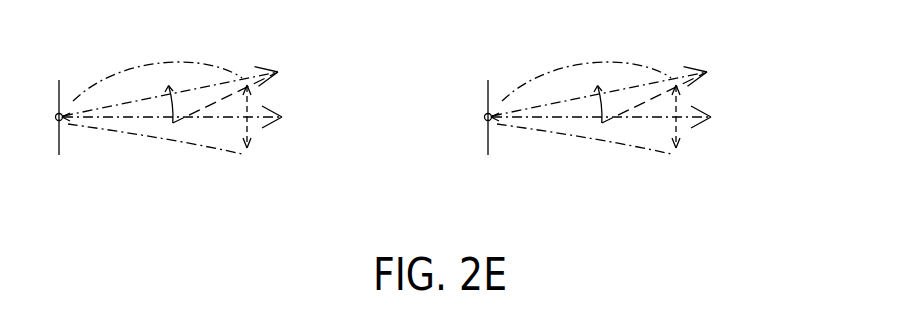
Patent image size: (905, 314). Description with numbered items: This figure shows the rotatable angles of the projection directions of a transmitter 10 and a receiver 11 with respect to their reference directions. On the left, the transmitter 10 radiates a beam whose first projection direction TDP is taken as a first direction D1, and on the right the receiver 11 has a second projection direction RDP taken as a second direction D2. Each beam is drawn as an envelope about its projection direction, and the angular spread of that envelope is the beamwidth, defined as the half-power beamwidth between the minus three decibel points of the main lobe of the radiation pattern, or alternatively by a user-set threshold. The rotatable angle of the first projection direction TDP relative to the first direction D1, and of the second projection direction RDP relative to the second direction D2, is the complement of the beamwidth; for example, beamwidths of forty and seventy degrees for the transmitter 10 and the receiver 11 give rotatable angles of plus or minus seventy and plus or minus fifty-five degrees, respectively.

The transmitter 10 is at (60, 121).
The receiver 11 is at (489, 121).
The first projection direction TDP is at (201, 86).
The second projection direction RDP is at (631, 86).
The first direction D1 is at (282, 77).
The second direction D2 is at (711, 77).